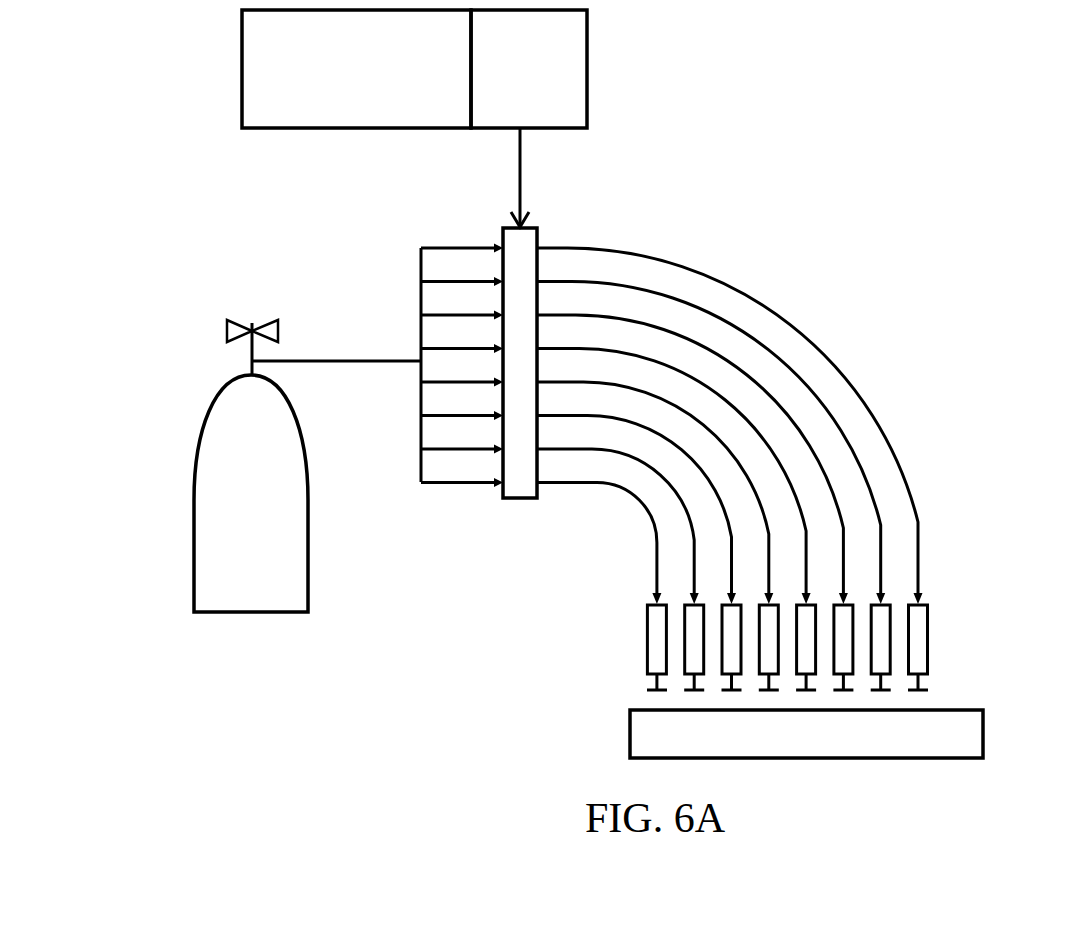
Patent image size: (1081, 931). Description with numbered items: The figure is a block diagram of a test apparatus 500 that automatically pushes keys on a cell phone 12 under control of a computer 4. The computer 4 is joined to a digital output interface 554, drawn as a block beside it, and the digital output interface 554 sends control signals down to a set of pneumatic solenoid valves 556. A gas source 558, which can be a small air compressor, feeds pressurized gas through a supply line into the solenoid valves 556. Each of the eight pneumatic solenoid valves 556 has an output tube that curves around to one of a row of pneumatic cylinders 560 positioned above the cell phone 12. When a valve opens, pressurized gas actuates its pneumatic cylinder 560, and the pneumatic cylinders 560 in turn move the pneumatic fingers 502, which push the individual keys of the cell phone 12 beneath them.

The test apparatus 500 is at (141, 105).
The computer 4 is at (356, 69).
The digital output interface 554 is at (582, 66).
The pneumatic solenoid valves 556 is at (515, 452).
The gas source 558 is at (307, 466).
The pneumatic cylinders 560 is at (798, 621).
The pneumatic fingers 502 is at (626, 685).
The cell phone 12 is at (963, 736).